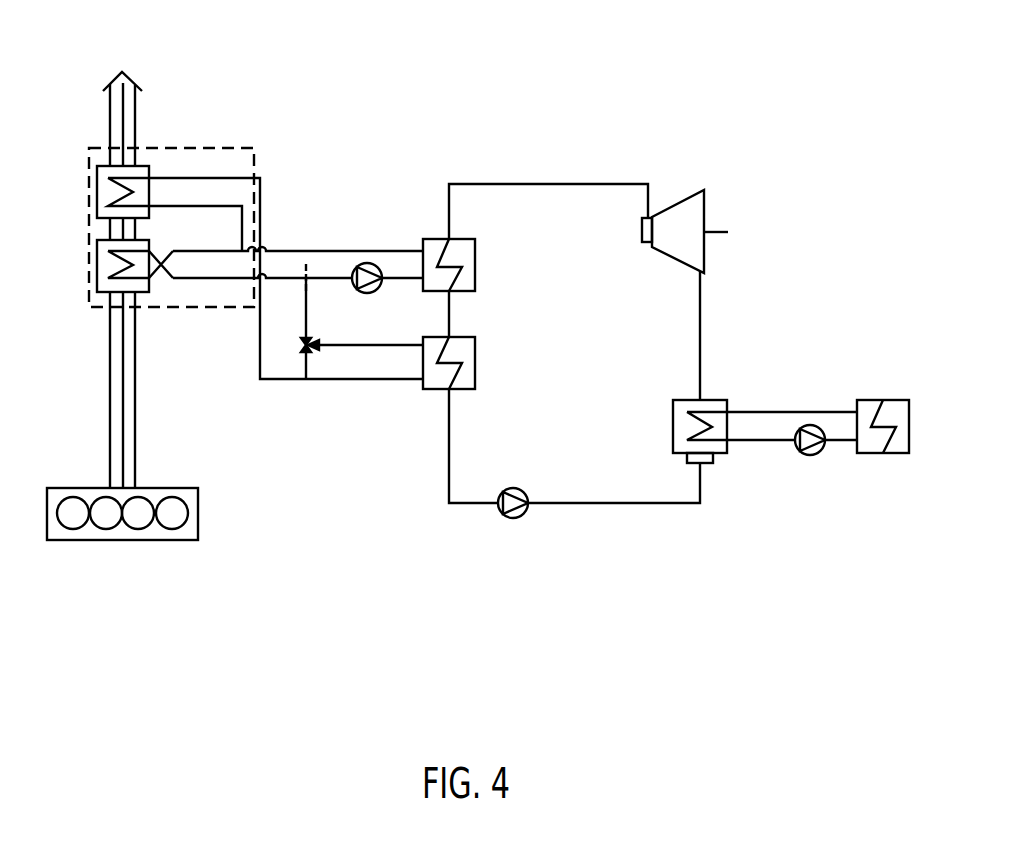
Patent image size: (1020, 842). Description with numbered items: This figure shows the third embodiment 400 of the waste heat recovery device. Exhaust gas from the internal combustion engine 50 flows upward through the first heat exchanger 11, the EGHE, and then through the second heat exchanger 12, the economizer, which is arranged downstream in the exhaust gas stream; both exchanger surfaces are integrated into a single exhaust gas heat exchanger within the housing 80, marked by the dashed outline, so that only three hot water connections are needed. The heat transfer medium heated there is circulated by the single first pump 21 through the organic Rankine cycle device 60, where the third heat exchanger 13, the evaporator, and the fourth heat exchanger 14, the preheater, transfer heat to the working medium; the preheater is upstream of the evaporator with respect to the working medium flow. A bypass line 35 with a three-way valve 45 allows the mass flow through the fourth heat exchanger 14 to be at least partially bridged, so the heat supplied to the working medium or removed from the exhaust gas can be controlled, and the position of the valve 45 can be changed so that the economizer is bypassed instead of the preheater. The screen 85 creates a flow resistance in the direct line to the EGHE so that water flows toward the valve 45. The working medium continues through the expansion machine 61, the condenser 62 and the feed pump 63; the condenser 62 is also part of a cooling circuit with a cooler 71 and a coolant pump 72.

The third embodiment 400 is at (578, 97).
The housing 80 is at (220, 147).
The second heat exchanger 12 is at (97, 176).
The first heat exchanger 11 is at (97, 249).
The screen 85 is at (301, 266).
The valve 45 is at (309, 339).
The first pump 21 is at (378, 290).
The bypass line 35 is at (307, 365).
The third heat exchanger 13 is at (476, 250).
The fourth heat exchanger 14 is at (476, 346).
The organic Rankine cycle device 60 is at (605, 354).
The expansion machine 61 is at (667, 206).
The condenser 62 is at (718, 399).
The feed pump 63 is at (501, 514).
The cooler 71 is at (866, 399).
The coolant pump 72 is at (798, 451).
The internal combustion engine 50 is at (173, 541).